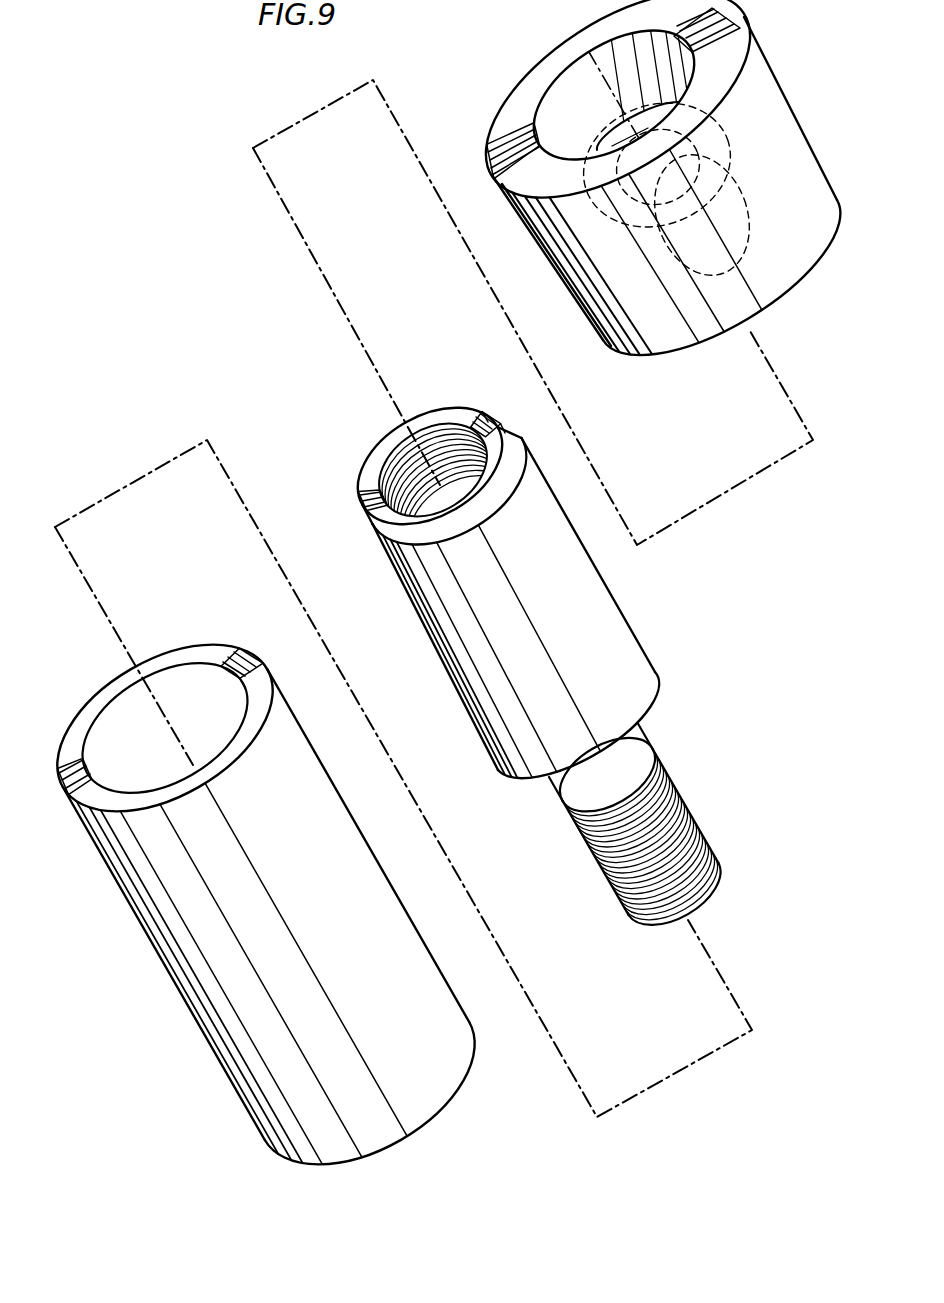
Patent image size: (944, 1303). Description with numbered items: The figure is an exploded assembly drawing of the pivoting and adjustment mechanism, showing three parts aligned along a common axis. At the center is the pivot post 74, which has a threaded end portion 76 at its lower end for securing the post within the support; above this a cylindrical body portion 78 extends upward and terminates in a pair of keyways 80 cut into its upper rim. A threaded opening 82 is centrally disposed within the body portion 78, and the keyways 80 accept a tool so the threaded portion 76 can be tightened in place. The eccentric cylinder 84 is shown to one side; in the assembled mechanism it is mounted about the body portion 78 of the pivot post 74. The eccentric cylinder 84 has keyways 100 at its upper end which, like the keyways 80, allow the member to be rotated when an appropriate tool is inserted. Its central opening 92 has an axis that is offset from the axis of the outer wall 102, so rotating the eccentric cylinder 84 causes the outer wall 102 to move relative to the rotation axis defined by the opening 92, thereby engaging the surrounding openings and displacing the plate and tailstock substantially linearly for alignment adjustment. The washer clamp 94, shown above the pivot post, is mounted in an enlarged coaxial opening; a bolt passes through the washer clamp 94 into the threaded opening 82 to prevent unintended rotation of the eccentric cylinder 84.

The pivot post 74 is at (537, 640).
The threaded end portion 76 is at (697, 797).
The cylindrical body portion 78 is at (628, 664).
The keyways 80 is at (496, 426).
The threaded opening 82 is at (445, 480).
The eccentric cylinder 84 is at (252, 882).
The opening 92 is at (190, 668).
The washer clamp 94 is at (768, 278).
The keyways 100 is at (258, 661).
The outer wall 102 is at (207, 965).